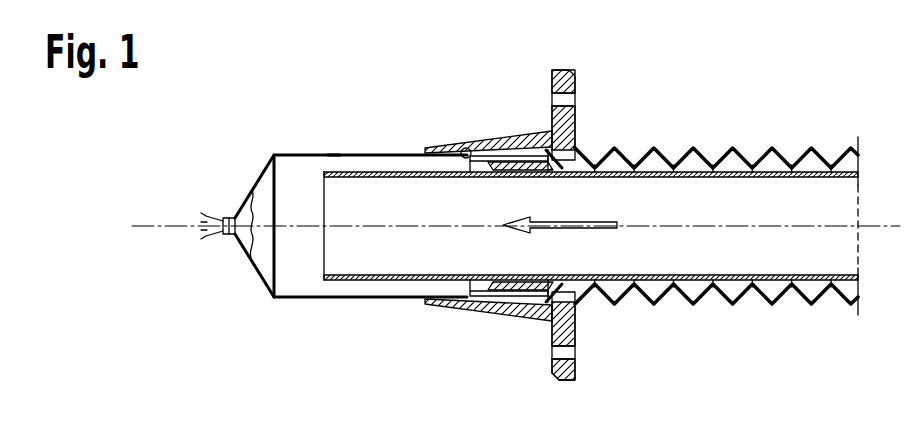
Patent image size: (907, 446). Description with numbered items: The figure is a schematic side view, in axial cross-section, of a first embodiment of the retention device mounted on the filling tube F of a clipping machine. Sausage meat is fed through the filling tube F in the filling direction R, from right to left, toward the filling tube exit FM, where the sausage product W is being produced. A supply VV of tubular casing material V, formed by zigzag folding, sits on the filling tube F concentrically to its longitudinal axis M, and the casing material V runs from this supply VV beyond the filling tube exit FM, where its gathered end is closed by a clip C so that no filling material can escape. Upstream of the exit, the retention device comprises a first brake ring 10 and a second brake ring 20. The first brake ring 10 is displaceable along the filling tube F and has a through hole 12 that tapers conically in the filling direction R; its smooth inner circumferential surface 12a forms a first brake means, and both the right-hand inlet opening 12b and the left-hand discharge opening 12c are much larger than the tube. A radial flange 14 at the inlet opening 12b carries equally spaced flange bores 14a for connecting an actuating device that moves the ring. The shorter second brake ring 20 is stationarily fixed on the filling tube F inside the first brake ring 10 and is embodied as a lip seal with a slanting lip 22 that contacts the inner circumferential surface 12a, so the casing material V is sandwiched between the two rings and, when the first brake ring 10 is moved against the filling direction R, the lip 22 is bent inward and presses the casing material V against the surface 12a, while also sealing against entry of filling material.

The first brake ring 10 is at (572, 66).
The through hole 12 is at (552, 145).
The inner circumferential surface 12a is at (516, 128).
The inlet opening 12b is at (578, 322).
The discharge opening 12c is at (428, 301).
The flange 14 is at (556, 380).
The flange bores 14a is at (568, 352).
The second brake ring 20 is at (520, 300).
The lip 22 is at (461, 150).
The filling tube F is at (377, 172).
The filling tube exit FM is at (323, 203).
The casing material V is at (333, 155).
The supply VV is at (783, 150).
The sausage product W is at (262, 174).
The clip C is at (234, 237).
The longitudinal axis M is at (147, 226).
The filling direction R is at (560, 212).